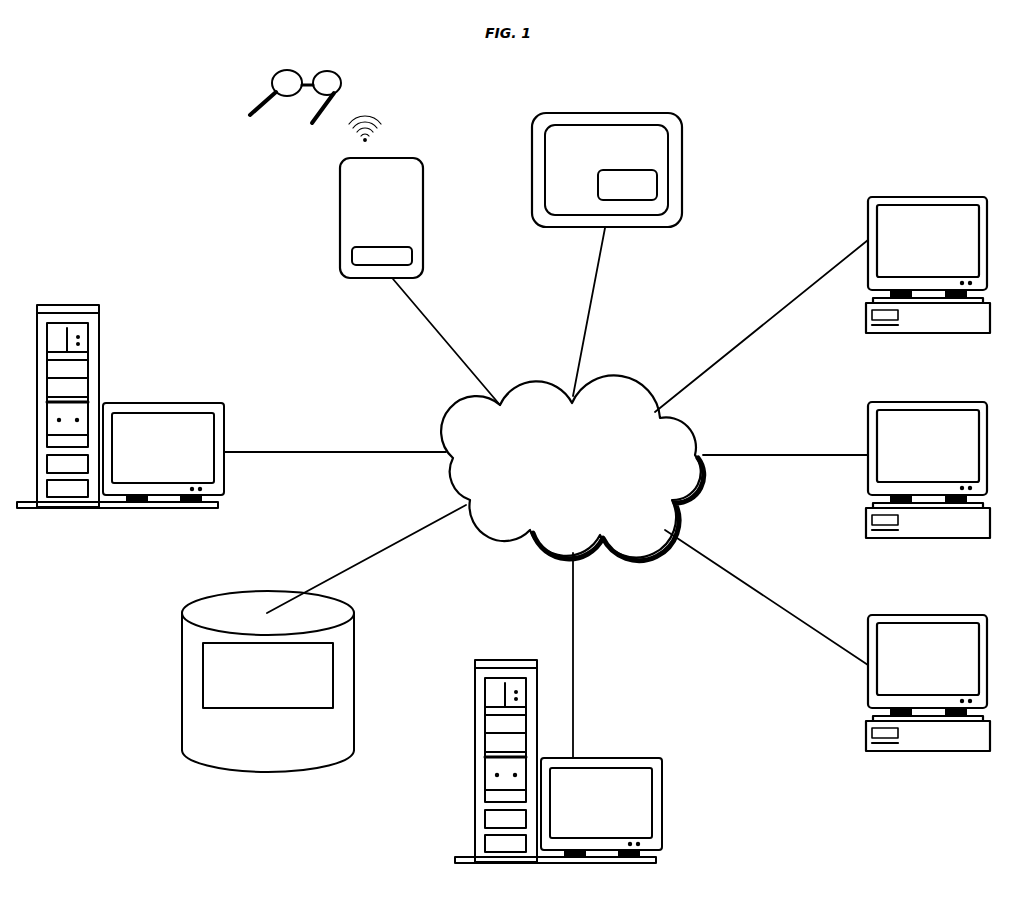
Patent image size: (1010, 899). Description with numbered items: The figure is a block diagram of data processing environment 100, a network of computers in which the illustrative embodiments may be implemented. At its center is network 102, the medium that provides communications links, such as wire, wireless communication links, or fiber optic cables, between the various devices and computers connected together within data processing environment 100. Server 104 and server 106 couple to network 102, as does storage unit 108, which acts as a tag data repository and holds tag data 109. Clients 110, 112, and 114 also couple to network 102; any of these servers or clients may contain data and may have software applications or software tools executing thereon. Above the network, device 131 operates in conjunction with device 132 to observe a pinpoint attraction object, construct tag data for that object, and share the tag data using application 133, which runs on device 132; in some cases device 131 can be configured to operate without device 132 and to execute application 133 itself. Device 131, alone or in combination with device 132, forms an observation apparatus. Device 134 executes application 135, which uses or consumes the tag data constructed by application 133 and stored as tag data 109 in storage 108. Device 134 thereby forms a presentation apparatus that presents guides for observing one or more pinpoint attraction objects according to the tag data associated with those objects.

The data processing environment 100 is at (112, 152).
The network 102 is at (572, 467).
The server 104 is at (120, 420).
The server 106 is at (558, 775).
The storage unit 108 is at (268, 681).
The tag data 109 is at (268, 675).
The client 110 is at (928, 483).
The client 112 is at (928, 695).
The client 114 is at (928, 276).
The device 131 is at (341, 81).
The device 132 is at (340, 192).
The application 133 is at (347, 262).
The device 134 is at (682, 131).
The application 135 is at (657, 192).